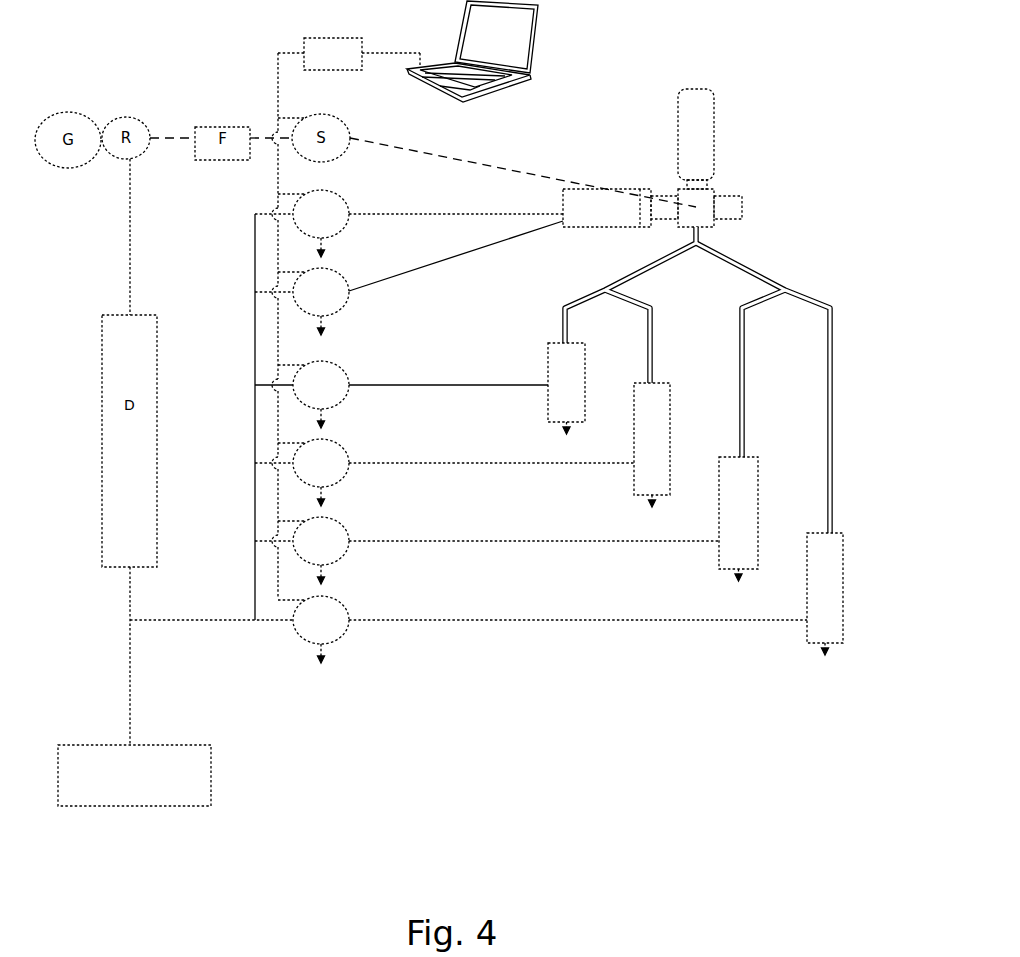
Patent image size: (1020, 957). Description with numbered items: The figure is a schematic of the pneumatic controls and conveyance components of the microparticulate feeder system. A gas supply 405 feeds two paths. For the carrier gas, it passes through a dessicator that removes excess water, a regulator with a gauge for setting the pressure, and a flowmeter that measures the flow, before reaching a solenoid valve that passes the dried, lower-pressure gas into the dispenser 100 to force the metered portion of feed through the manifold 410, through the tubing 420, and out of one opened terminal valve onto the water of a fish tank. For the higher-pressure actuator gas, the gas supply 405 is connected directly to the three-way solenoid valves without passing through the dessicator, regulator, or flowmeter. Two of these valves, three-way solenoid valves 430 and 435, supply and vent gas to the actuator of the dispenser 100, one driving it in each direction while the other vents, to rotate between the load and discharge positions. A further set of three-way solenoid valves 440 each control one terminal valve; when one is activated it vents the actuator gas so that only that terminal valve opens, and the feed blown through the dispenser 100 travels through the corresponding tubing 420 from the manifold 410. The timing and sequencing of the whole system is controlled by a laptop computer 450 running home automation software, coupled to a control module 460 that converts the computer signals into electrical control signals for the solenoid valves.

The dispenser 100 is at (717, 188).
The gas supply 405 is at (211, 783).
The manifold 410 is at (750, 273).
The tubing 420 is at (569, 320).
The three-way solenoid valve S3 430 is at (336, 192).
The three-way solenoid valve S3 435 is at (348, 297).
The three-way solenoid valve S3 440 is at (338, 366).
The laptop computer 450 is at (533, 62).
The control module 460 is at (349, 54).